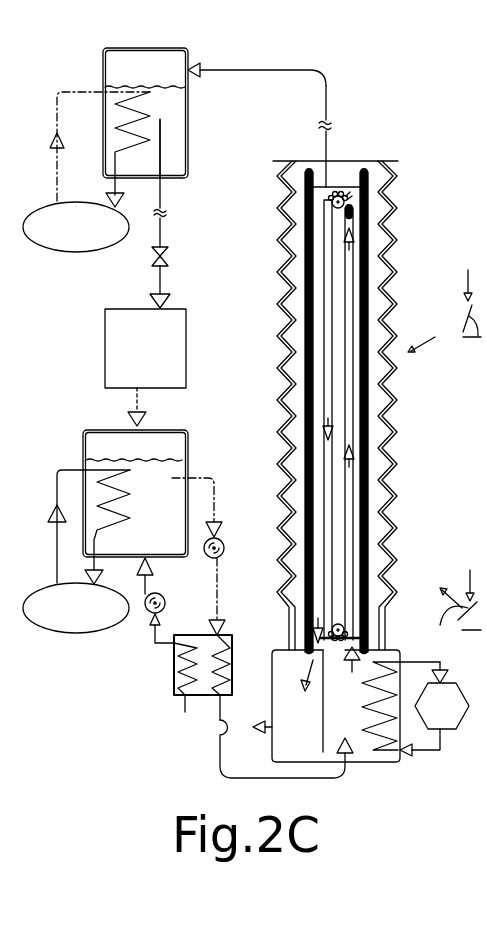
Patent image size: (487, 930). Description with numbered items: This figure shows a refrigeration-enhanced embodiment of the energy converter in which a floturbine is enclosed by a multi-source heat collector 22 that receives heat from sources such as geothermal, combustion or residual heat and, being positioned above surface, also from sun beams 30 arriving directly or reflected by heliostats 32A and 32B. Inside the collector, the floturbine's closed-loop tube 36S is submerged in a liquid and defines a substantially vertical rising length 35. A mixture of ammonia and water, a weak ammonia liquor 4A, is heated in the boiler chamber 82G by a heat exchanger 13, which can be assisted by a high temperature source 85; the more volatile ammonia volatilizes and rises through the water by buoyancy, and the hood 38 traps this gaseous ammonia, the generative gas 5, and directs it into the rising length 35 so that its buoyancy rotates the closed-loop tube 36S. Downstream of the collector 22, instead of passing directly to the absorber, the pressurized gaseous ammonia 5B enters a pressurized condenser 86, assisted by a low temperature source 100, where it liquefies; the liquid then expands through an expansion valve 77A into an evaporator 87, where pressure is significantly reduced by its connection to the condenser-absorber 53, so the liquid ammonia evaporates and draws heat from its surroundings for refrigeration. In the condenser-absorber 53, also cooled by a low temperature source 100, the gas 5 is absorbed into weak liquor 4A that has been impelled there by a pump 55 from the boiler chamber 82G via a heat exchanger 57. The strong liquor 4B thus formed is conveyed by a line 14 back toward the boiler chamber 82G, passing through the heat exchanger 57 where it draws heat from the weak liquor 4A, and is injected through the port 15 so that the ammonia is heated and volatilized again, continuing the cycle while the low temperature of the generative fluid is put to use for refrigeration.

The pressurized gaseous ammonia 5B is at (152, 84).
The pressurized condenser 86 is at (107, 135).
The low temperature source 100 is at (99, 244).
The expansion valve 77A is at (165, 256).
The evaporator 87 is at (157, 359).
The condenser-absorber 53 is at (83, 432).
The strong liquor 4B is at (168, 493).
The weak ammonia liquor 4A is at (171, 548).
The pump / line 14 is at (213, 500).
The pump 55 is at (148, 622).
The heat exchanger 57 is at (175, 688).
The boiler chamber 82G is at (272, 668).
The closed-loop tube 36S is at (316, 270).
The sun beams 30 is at (466, 286).
The heliostat 32B is at (460, 328).
The vertical rising length 35 is at (350, 455).
The multi-source heat collector 22 is at (378, 500).
The hood 38 is at (345, 600).
The generative fluid or gas 5 is at (357, 624).
The heliostat 32A is at (450, 623).
The high temperature source 85 is at (454, 720).
The port 15 is at (352, 750).
The heat exchanger 13 is at (388, 708).